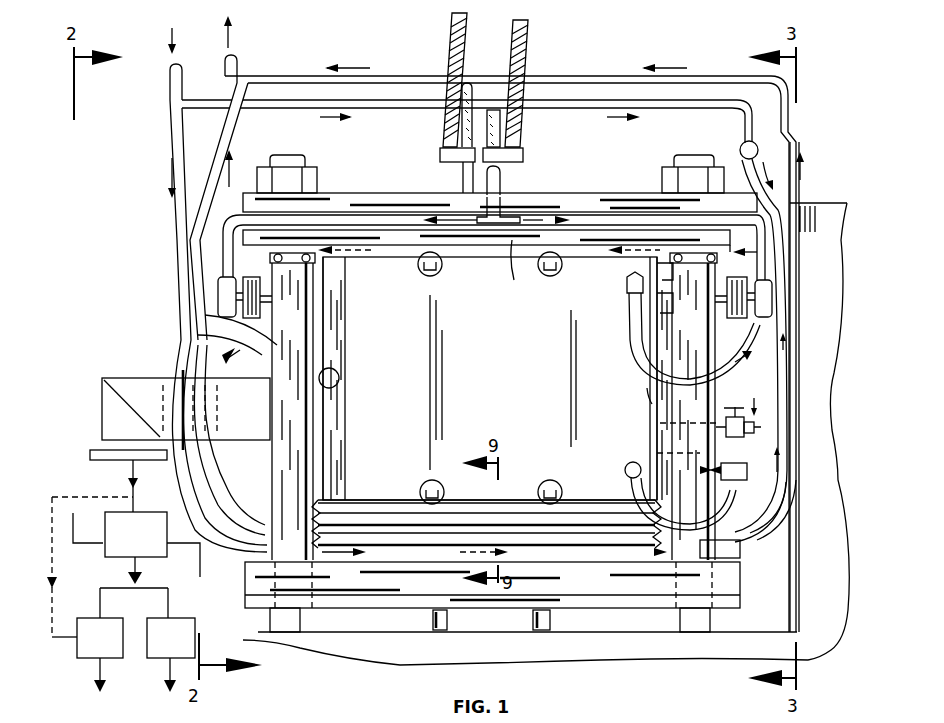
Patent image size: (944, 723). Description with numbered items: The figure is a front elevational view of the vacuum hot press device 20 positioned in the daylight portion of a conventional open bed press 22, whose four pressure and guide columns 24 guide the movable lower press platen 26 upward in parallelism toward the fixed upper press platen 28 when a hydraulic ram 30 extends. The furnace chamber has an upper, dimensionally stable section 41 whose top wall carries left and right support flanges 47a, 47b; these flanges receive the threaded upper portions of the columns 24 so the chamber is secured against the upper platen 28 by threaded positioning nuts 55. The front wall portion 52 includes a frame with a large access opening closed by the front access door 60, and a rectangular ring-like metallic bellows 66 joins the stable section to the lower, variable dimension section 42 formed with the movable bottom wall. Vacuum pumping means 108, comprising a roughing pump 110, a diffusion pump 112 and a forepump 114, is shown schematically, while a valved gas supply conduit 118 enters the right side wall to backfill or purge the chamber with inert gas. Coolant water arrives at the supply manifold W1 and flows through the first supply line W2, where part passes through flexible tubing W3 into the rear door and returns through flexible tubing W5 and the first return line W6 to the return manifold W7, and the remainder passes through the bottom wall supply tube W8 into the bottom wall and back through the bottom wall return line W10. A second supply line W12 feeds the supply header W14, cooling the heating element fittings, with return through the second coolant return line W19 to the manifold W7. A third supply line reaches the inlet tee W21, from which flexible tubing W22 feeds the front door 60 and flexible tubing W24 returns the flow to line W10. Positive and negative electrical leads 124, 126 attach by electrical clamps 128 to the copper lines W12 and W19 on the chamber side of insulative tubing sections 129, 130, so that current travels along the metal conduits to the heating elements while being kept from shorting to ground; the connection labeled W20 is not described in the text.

The vacuum hot press device 20 is at (744, 251).
The open bed type press 22 is at (830, 475).
The pressure and guide columns 24 is at (336, 384).
The lower press platen 26 is at (590, 591).
The upper press platen 28 is at (357, 193).
The ram 30 is at (553, 620).
The upper stable chamber section 41 is at (300, 410).
The lower variable dimension chamber section 42 is at (388, 555).
The left support flange 47a is at (265, 248).
The right support flange 47b is at (752, 283).
The front wall portion 52 is at (440, 540).
The threaded positioning nuts 55 is at (312, 258).
The front access door 60 is at (510, 375).
The metallic bellows 66 is at (350, 500).
The pumping means 108 is at (80, 592).
The roughing pump 110 is at (115, 649).
The diffusion pump 112 is at (150, 545).
The forepump 114 is at (186, 649).
The valved gas supply conduit 118 is at (761, 422).
The positive electrical lead 124 is at (531, 47).
The negative electrical lead 126 is at (450, 46).
The electrical clamp 128 is at (517, 160).
The insulative tubing section 129 is at (502, 122).
The insulative tubing section 130 is at (468, 97).
The coolant water supply manifold W1 is at (267, 100).
The first supply line W2 is at (181, 130).
The flexible tubing W3 is at (218, 510).
The flexible tubing W5 is at (207, 320).
The first return line W6 is at (234, 130).
The coolant water return manifold W7 is at (600, 74).
The bottom wall supply tube W8 is at (230, 550).
The bottom wall return line W10 is at (777, 523).
The second supply line W12 is at (515, 135).
The supply header W14 is at (603, 212).
The second coolant return line W19 is at (461, 180).
The pipe W20 is at (774, 200).
The inlet tee W21 is at (754, 488).
The flexible tubing W22 is at (627, 473).
The flexible tubing W24 is at (633, 325).